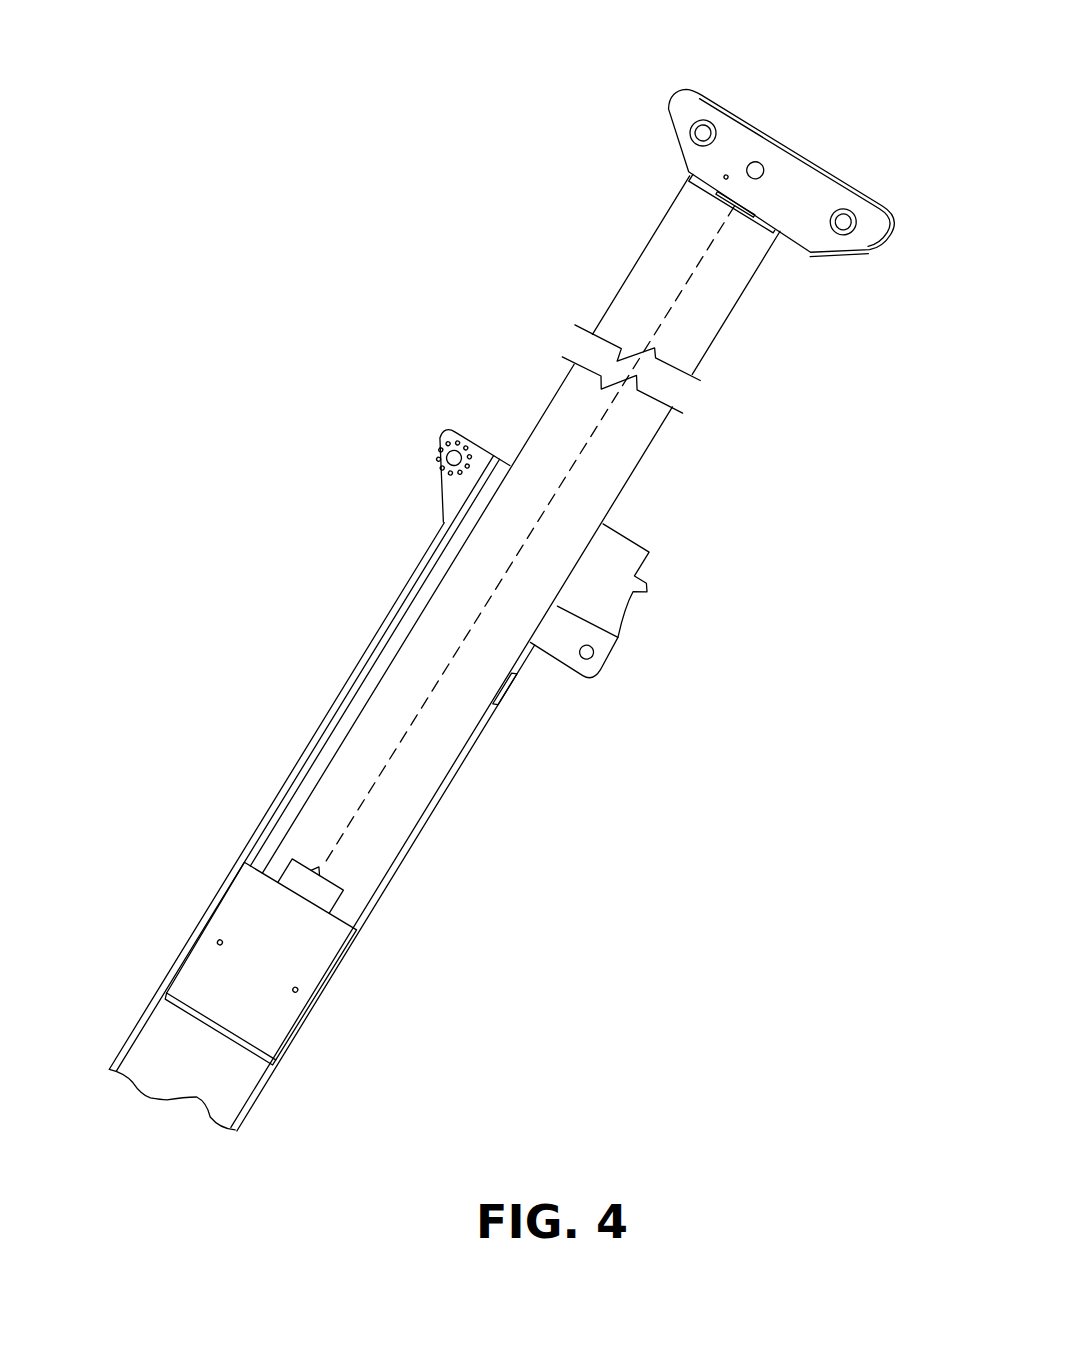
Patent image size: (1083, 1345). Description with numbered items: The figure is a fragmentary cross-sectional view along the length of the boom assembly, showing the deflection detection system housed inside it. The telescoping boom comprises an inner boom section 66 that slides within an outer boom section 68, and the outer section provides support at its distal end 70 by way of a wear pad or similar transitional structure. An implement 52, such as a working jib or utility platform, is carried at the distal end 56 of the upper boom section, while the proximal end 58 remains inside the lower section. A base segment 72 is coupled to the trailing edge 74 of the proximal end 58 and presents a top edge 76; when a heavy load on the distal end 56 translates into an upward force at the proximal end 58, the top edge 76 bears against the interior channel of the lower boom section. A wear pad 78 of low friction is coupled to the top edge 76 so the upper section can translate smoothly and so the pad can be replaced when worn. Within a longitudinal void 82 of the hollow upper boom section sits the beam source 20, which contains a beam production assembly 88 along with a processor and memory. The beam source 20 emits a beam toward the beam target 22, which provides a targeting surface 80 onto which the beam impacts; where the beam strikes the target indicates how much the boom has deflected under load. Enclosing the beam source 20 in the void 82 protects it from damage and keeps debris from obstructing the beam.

The beam source 20 is at (345, 893).
The beam target 22 is at (753, 228).
The implement 52 is at (701, 92).
The distal end 56 is at (628, 190).
The proximal end 58 is at (195, 1023).
The inner boom section 66 is at (546, 413).
The outer boom section 68 is at (407, 580).
The distal end 70 is at (640, 705).
The base segment 72 is at (270, 1022).
The trailing edge 74 is at (237, 1044).
The top edge 76 is at (200, 937).
The wear pad 78 is at (237, 882).
The targeting surface 80 is at (706, 196).
The void 82 is at (683, 337).
The beam production assembly 88 is at (318, 855).